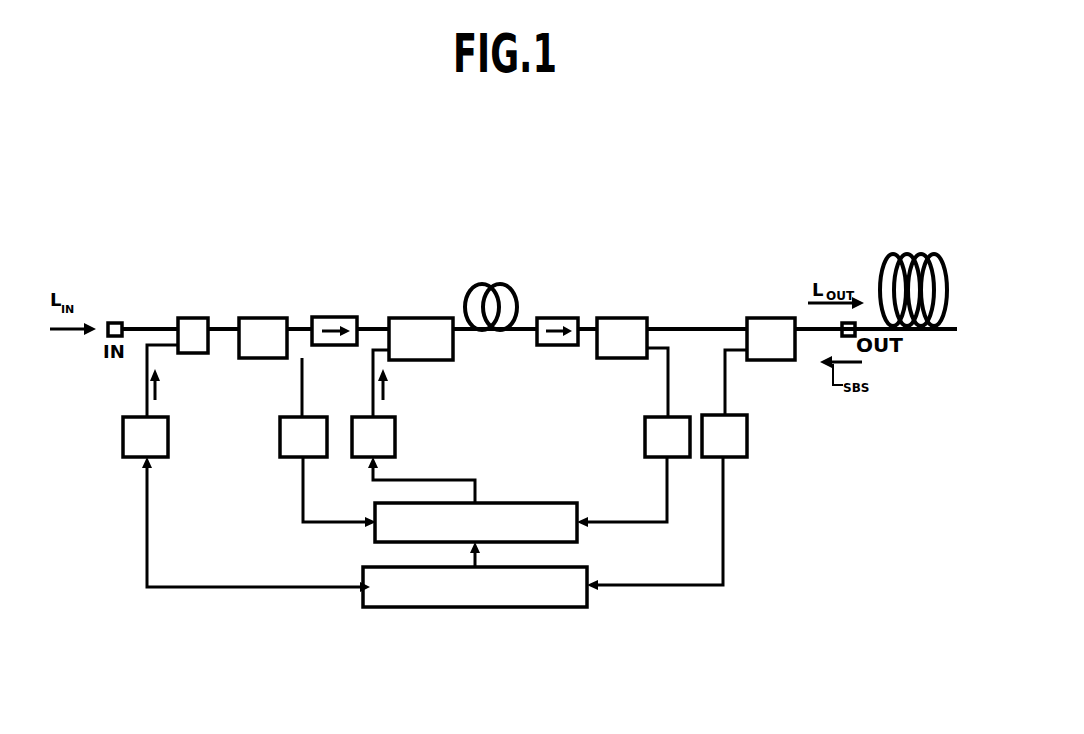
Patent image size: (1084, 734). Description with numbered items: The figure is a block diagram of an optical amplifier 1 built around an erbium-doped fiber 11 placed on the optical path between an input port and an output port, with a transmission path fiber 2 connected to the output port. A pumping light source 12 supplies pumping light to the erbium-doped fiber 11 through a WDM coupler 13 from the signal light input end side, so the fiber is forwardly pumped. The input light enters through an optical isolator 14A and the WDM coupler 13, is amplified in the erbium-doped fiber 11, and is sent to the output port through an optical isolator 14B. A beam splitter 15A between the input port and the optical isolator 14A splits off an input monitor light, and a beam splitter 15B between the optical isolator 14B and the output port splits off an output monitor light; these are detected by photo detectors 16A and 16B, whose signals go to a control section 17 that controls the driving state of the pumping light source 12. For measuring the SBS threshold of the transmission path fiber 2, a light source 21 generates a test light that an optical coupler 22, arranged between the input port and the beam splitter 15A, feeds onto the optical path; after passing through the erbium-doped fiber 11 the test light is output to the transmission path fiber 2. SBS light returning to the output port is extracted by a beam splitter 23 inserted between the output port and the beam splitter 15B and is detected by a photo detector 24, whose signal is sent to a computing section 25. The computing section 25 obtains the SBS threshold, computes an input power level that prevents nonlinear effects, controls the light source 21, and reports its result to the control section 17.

The optical amplifier 1 is at (338, 233).
The transmission path fiber 2 is at (902, 256).
The erbium-doped fiber 11 is at (489, 284).
The pumping light source 12 is at (395, 436).
The WDM coupler 13 is at (421, 318).
The optical isolator 14A is at (333, 317).
The optical isolator 14B is at (554, 318).
The beam splitter 15A is at (262, 318).
The beam splitter 15B is at (619, 318).
The photo detector 16A is at (281, 437).
The photo detector 16B is at (645, 437).
The control section 17 is at (495, 503).
The light source 21 is at (168, 438).
The optical coupler 22 is at (191, 318).
The beam splitter 23 is at (772, 318).
The photo detector 24 is at (747, 436).
The computing section 25 is at (470, 607).